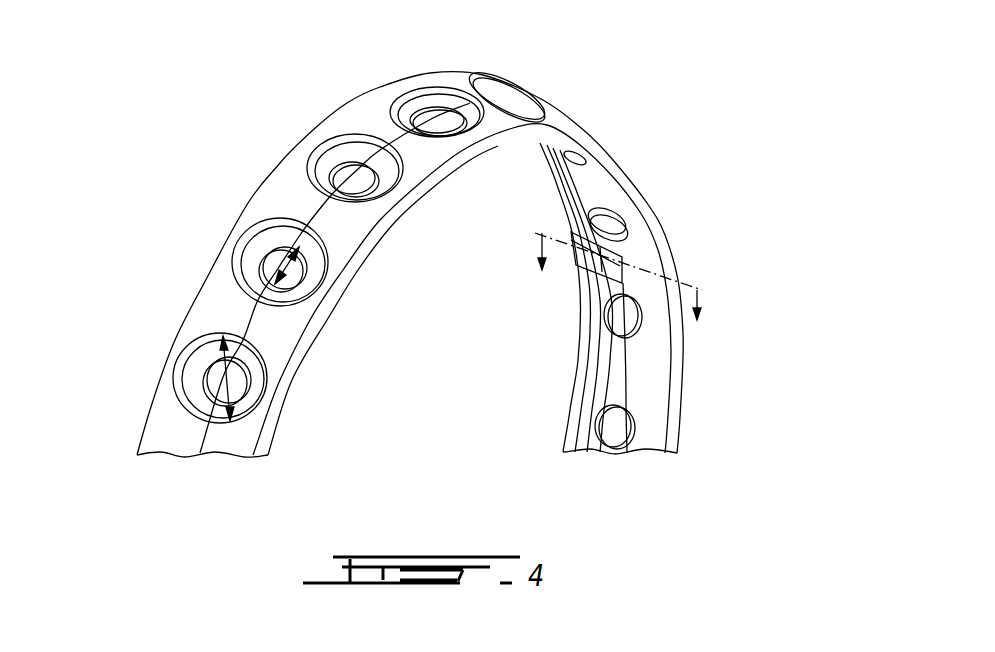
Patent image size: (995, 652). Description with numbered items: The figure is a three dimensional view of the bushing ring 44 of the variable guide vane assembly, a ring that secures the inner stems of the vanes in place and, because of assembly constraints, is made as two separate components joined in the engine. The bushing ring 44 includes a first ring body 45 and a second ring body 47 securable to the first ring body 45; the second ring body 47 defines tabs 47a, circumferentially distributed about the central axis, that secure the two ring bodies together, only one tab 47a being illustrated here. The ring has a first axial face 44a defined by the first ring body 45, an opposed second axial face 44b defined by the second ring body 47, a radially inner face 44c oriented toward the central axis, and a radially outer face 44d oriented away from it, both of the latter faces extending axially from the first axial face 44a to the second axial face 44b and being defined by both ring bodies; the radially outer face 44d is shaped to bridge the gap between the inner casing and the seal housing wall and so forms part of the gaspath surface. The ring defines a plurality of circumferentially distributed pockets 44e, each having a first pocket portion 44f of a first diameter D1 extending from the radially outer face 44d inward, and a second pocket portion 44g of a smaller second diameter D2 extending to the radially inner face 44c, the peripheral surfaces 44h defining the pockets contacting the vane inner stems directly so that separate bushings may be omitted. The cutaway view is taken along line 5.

The bushing ring 44 is at (722, 150).
The first axial face 44a is at (330, 120).
The second axial face 44b is at (658, 225).
The radially inner face 44c is at (652, 392).
The radially outer face 44d is at (233, 442).
The pockets 44e is at (268, 262).
The first pocket portion 44f is at (441, 102).
The second pocket portion 44g is at (358, 185).
The peripheral surfaces 44h is at (500, 99).
The first ring body 45 is at (285, 192).
The second ring body 47 is at (652, 284).
The tabs 47a is at (598, 266).
The first diameter D1 is at (232, 380).
The second diameter D2 is at (292, 262).
The section line 5- 5 is at (622, 262).